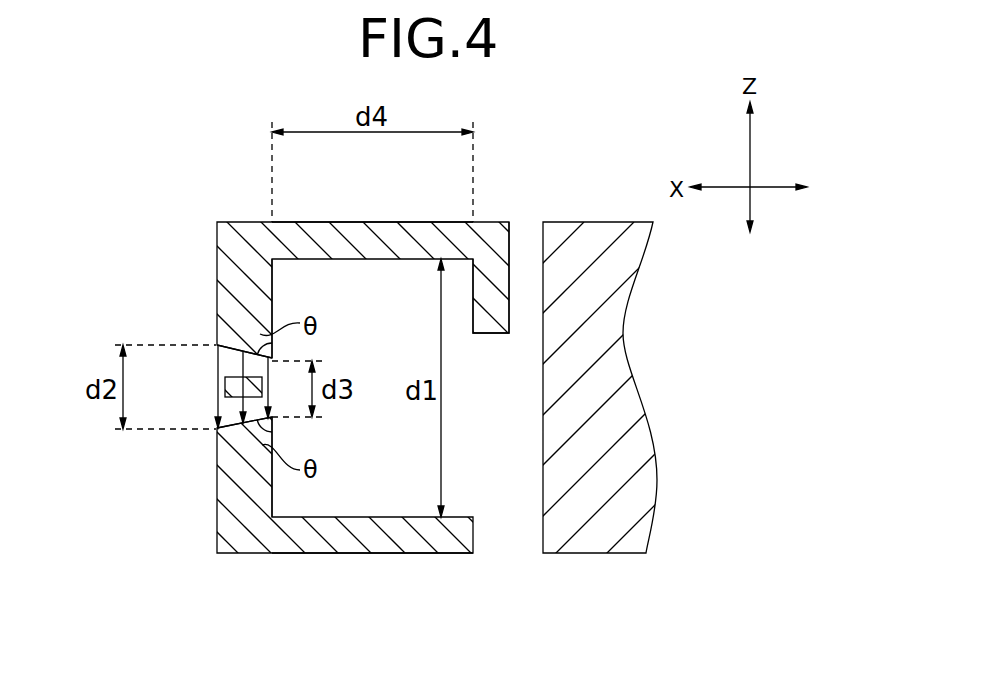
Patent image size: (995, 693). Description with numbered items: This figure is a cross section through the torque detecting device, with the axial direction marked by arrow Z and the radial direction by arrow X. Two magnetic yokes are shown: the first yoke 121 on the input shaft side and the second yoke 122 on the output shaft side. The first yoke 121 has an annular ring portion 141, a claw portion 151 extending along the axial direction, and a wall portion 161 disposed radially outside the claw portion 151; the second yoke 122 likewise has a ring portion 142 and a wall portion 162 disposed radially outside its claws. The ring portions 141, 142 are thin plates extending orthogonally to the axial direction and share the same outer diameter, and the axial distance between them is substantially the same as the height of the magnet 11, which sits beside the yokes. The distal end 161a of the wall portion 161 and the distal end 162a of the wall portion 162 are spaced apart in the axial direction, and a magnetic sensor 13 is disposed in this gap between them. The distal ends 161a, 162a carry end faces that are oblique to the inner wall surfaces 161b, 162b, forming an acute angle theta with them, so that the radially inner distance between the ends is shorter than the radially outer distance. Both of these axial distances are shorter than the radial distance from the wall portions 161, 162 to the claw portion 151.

The magnet 11 is at (604, 228).
The magnetic sensor 13 is at (225, 392).
The first yoke 121 is at (315, 221).
The second yoke 122 is at (284, 548).
The ring portion 141 is at (418, 222).
The ring portion 142 is at (452, 548).
The claw portion 151 is at (502, 283).
The wall portion 161 is at (222, 266).
The distal end 161a is at (213, 347).
The inner wall surface 161b is at (273, 288).
The wall portion 162 is at (226, 520).
The distal end 162a is at (216, 428).
The inner wall surface 162b is at (273, 501).